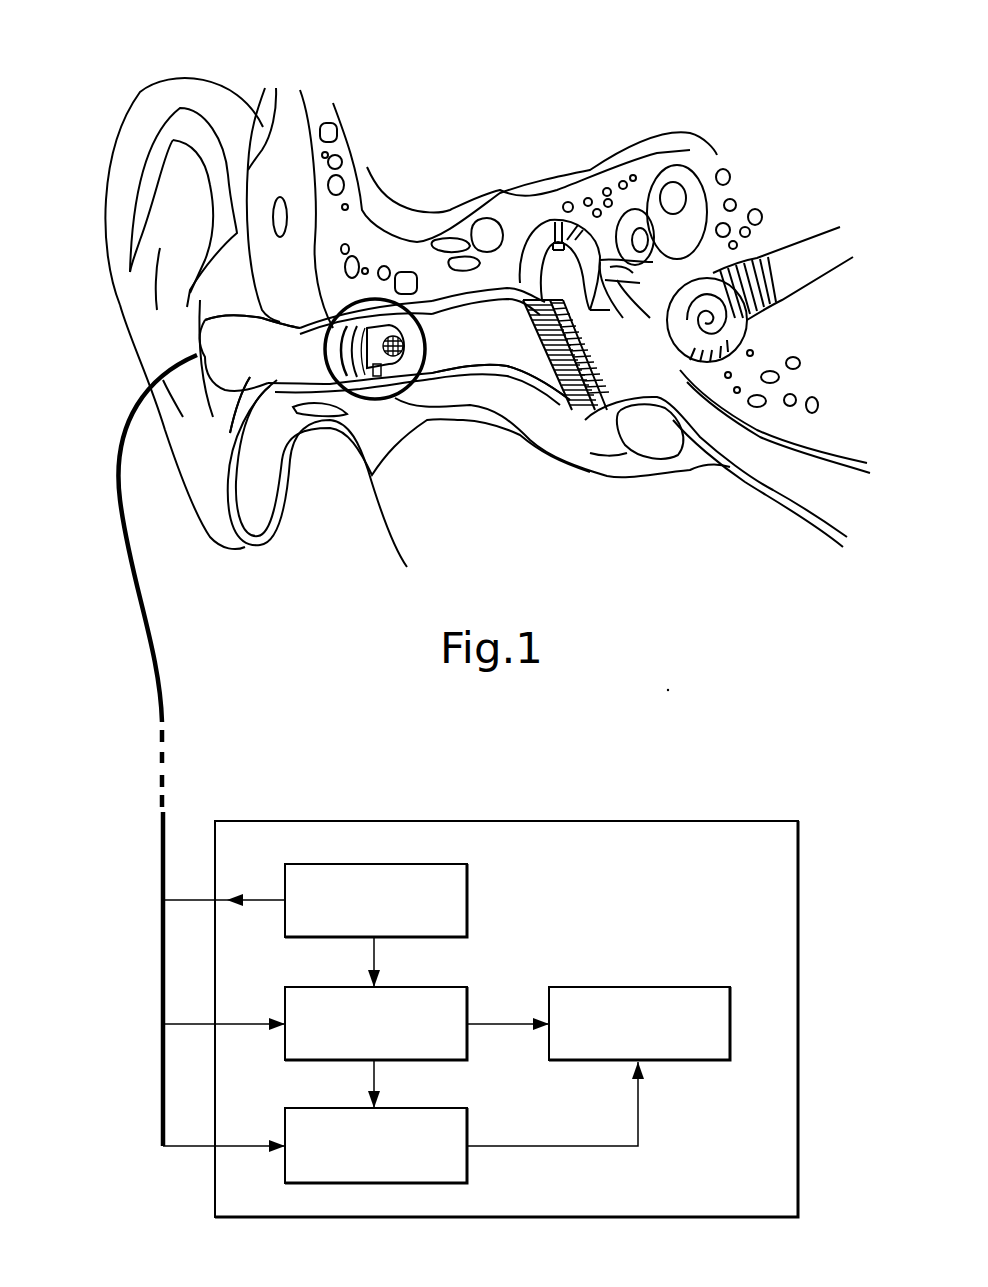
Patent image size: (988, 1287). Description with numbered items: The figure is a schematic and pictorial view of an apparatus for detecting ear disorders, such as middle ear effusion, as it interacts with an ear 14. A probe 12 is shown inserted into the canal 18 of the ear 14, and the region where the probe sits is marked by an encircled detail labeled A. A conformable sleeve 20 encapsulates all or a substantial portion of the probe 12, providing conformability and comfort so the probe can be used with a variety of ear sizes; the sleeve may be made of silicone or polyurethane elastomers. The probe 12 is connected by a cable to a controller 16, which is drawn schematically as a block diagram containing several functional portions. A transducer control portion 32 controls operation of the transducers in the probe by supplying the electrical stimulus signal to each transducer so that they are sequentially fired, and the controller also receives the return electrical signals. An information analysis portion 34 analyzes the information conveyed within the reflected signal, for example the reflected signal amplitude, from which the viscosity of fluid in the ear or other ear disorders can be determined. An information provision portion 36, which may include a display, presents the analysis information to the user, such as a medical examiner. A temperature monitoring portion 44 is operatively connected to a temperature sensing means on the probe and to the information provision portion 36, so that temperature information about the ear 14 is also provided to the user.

The ear 14 is at (193, 60).
The probe 12 is at (205, 340).
The conformable sleeve 20 is at (257, 368).
The canal 18 is at (482, 350).
The earpiece transducer assembly A is at (374, 399).
The controller 16 is at (458, 786).
The transducer control portion 32 is at (446, 868).
The information analysis portion 34 is at (446, 991).
The information provision portion 36 is at (709, 991).
The temperature monitoring portion 44 is at (446, 1112).